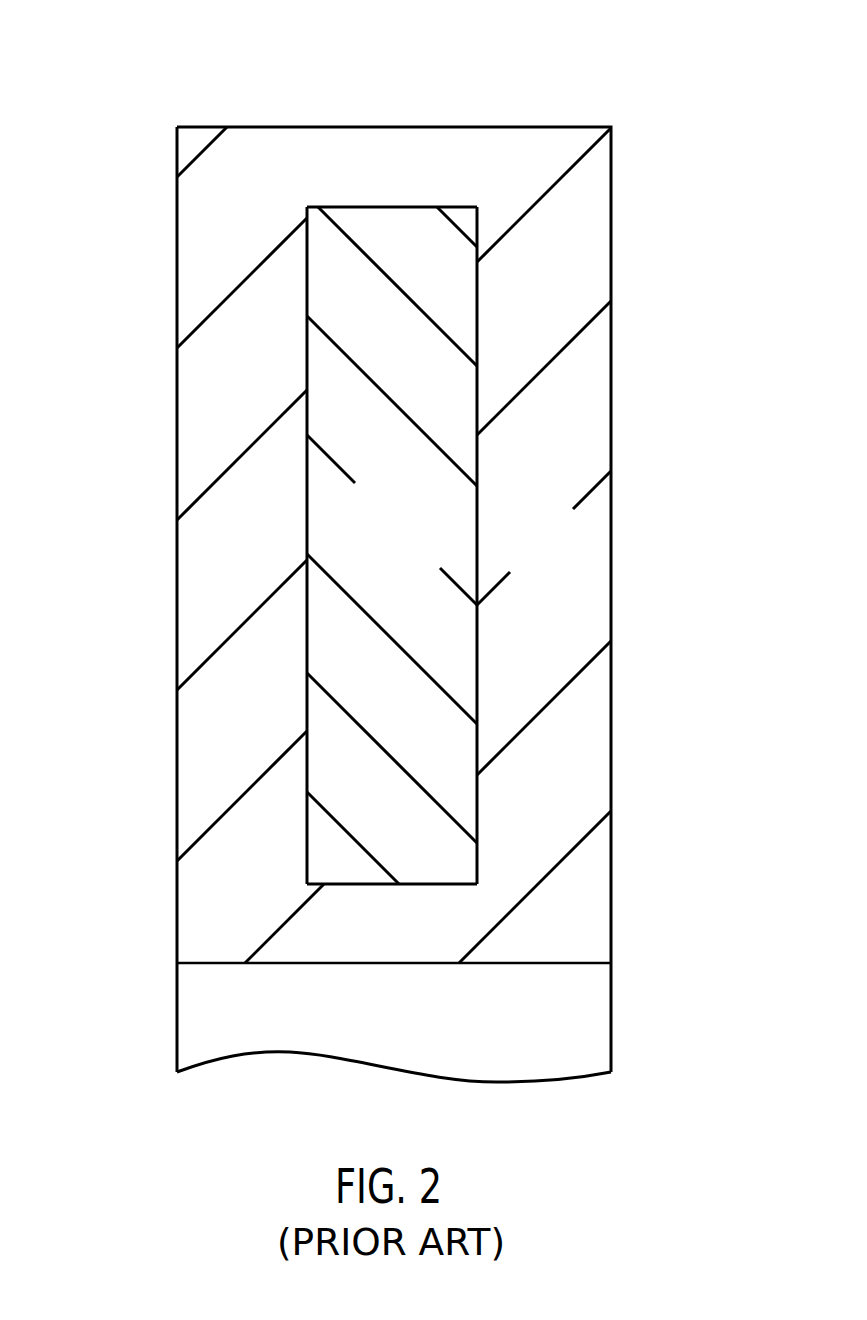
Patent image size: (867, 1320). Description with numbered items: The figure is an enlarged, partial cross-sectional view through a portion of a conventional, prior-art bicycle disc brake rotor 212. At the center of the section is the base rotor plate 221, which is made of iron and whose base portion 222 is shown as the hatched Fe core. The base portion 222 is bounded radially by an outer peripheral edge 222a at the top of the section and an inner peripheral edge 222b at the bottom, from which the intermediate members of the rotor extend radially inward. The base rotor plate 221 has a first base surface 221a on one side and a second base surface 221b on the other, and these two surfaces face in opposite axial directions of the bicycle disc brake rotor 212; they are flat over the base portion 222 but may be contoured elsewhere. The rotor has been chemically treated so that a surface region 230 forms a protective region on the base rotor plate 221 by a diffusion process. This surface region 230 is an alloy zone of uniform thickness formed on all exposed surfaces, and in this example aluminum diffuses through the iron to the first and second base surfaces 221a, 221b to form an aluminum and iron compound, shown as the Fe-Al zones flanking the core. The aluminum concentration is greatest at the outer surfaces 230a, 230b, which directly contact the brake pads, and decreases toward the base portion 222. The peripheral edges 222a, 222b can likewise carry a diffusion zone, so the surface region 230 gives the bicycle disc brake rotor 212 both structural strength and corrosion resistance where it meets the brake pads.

The bicycle disc brake rotor 212 is at (56, 132).
The base rotor plate 221 is at (390, 545).
The first base surface 221a is at (307, 372).
The second base surface 221b is at (477, 293).
The base portion 222 is at (389, 542).
The outer peripheral edge 222a is at (403, 207).
The inner peripheral edge 222b is at (358, 884).
The surface region 230 is at (388, 545).
The outer surface 230a is at (177, 607).
The outer surface 230b is at (611, 445).